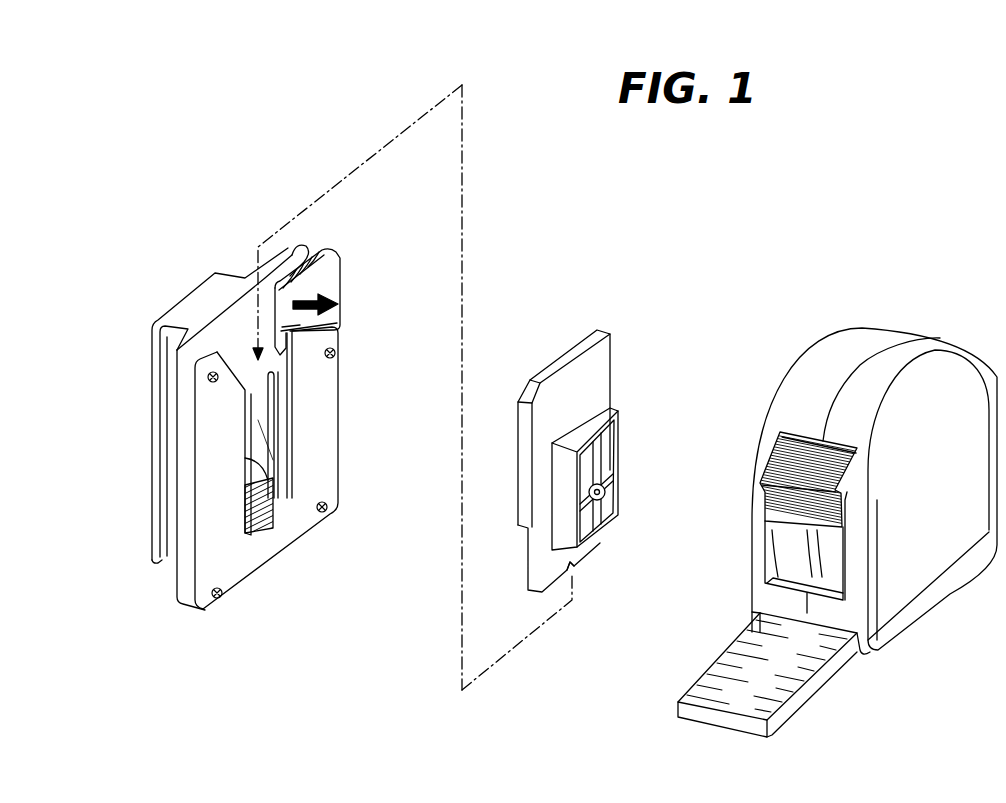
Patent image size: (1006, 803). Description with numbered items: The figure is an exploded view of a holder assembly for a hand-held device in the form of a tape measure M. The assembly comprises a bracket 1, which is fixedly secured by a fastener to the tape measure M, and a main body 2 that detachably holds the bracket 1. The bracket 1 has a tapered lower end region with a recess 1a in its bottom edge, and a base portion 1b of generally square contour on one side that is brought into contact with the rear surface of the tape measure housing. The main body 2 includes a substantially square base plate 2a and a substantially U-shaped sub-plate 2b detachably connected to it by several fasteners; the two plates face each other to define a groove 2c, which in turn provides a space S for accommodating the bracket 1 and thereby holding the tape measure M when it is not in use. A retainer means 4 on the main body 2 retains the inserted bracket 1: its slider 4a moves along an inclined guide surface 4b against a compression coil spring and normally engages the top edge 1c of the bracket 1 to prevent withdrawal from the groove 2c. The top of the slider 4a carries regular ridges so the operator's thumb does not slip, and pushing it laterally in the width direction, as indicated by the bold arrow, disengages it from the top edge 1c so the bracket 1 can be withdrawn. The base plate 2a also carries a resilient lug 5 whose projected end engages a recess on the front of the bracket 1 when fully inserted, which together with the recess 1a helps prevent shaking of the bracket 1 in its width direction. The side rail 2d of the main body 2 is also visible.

The bracket 1 is at (566, 345).
The recess 1a is at (573, 568).
The base portion 1b is at (600, 413).
The top edge 1c is at (600, 327).
The main body 2 is at (197, 270).
The base plate 2a is at (287, 252).
The sub-plate 2b is at (312, 428).
The groove 2c is at (278, 407).
The side rail of holder 2d is at (158, 515).
The retainer means 4 is at (343, 268).
The slider 4a is at (310, 249).
The guide surface 4b is at (317, 327).
The resilient lug 5 is at (258, 485).
The space S is at (266, 436).
The tape measure M is at (888, 326).